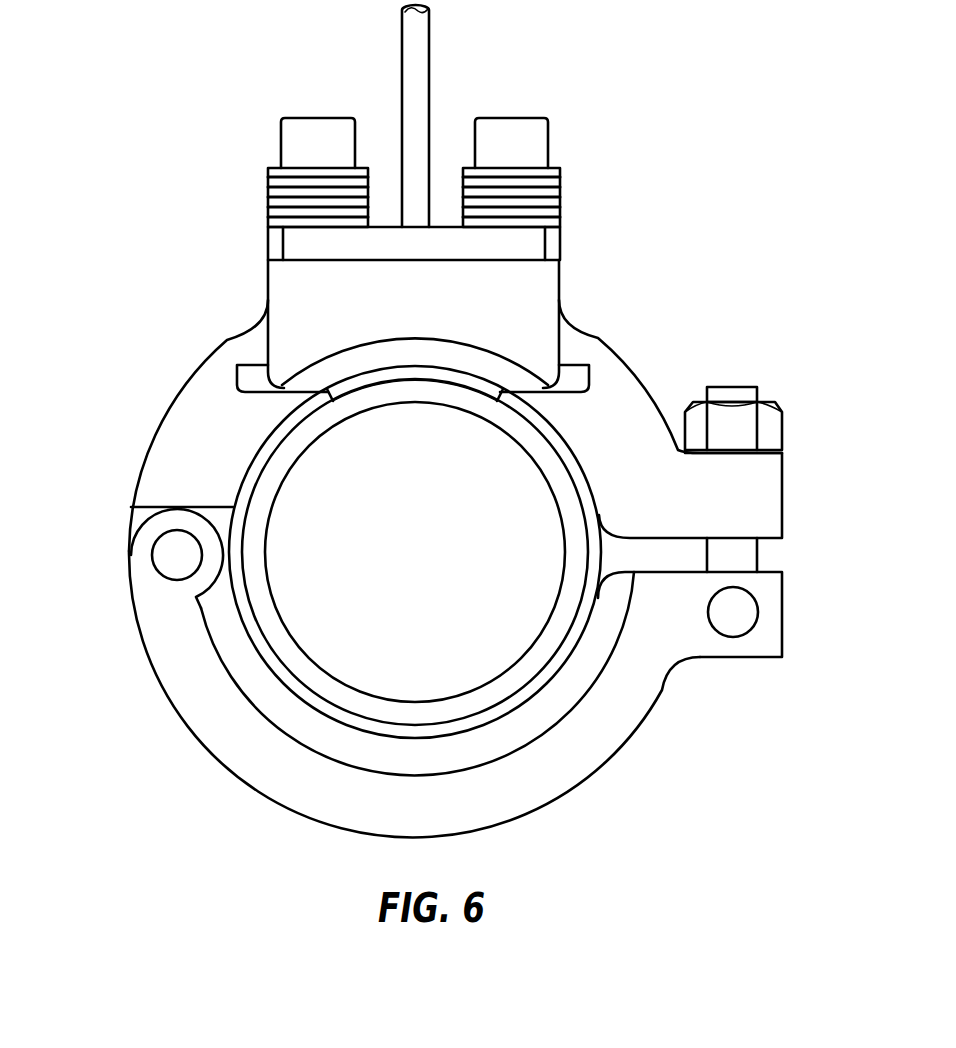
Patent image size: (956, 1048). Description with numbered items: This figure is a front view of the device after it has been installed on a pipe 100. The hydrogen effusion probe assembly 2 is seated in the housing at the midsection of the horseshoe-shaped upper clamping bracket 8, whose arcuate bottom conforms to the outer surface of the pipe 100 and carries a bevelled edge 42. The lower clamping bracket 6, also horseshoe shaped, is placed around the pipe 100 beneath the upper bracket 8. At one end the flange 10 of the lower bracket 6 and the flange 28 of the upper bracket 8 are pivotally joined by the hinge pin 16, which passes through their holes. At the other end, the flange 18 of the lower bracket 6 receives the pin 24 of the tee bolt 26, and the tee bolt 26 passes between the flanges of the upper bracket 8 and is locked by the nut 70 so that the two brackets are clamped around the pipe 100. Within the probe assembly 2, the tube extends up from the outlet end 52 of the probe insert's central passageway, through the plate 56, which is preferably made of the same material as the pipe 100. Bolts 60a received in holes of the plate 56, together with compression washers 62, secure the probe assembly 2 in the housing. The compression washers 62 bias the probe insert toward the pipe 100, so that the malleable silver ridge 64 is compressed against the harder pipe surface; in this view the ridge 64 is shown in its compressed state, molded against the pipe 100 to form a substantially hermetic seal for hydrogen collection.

The hydrogen effusion probe assembly 2 is at (675, 205).
The lower clamping bracket 6 is at (577, 768).
The upper clamping bracket 8 is at (620, 407).
The flange 10 is at (137, 562).
The hinge pin 16 is at (175, 568).
The flange 18 is at (775, 622).
The pin 24 is at (735, 627).
The tee bolt 26 is at (757, 560).
The flange 28 is at (131, 527).
The bevelled edge 42 is at (505, 368).
The outlet end 52 is at (425, 48).
The plate 56 is at (537, 243).
The bolt 60a is at (284, 128).
The compression washer 62 is at (258, 165).
The ridge 64 is at (352, 392).
The nut 70 is at (777, 422).
The pipe 100 is at (563, 623).